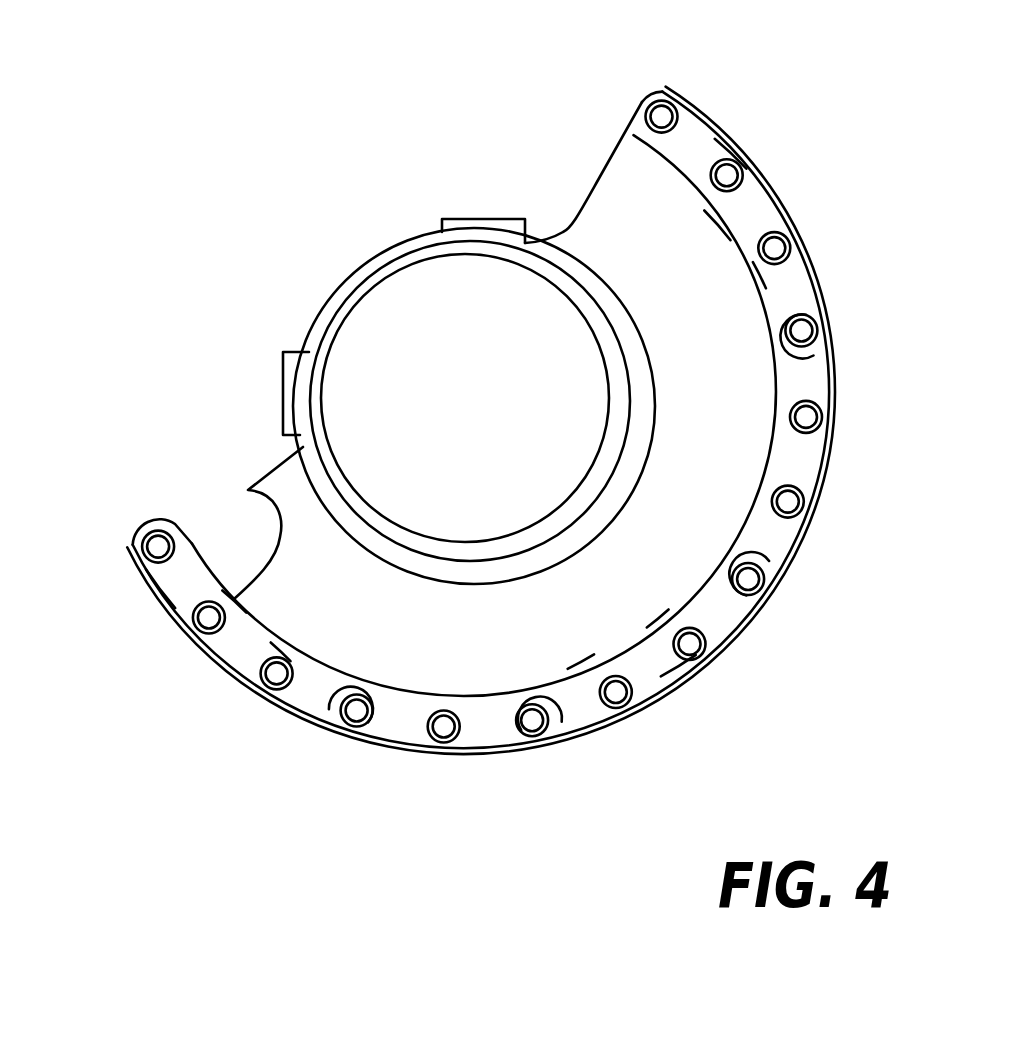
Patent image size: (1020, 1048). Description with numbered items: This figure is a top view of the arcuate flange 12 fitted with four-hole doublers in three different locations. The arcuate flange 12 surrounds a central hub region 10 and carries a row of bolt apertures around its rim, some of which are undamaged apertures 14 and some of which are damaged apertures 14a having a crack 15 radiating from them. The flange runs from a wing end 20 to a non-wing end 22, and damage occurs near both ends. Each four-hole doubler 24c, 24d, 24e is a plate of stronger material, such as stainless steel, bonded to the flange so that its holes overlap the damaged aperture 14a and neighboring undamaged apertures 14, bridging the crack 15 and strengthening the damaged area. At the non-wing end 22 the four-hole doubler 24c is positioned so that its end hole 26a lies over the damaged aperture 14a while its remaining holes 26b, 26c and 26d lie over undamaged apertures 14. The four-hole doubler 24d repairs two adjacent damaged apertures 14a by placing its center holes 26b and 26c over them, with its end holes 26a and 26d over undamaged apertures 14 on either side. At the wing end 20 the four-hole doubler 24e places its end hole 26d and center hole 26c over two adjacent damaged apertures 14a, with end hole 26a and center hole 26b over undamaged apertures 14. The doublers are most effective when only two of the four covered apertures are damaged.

The central hub 10 is at (353, 272).
The arcuate flange 12 is at (843, 440).
The undamaged apertures 14 is at (777, 248).
The damaged aperture 14a is at (650, 119).
The crack 15 is at (683, 103).
The wing end 20 is at (135, 515).
The non-wing end 22 is at (639, 86).
The four-hole doubler 24c is at (728, 148).
The four-hole doubler 24d is at (677, 693).
The four-hole doubler 24e is at (163, 610).
The end hole 26a is at (628, 147).
The middle hole 26b is at (717, 197).
The middle hole 26c is at (767, 267).
The end hole 26d is at (780, 343).